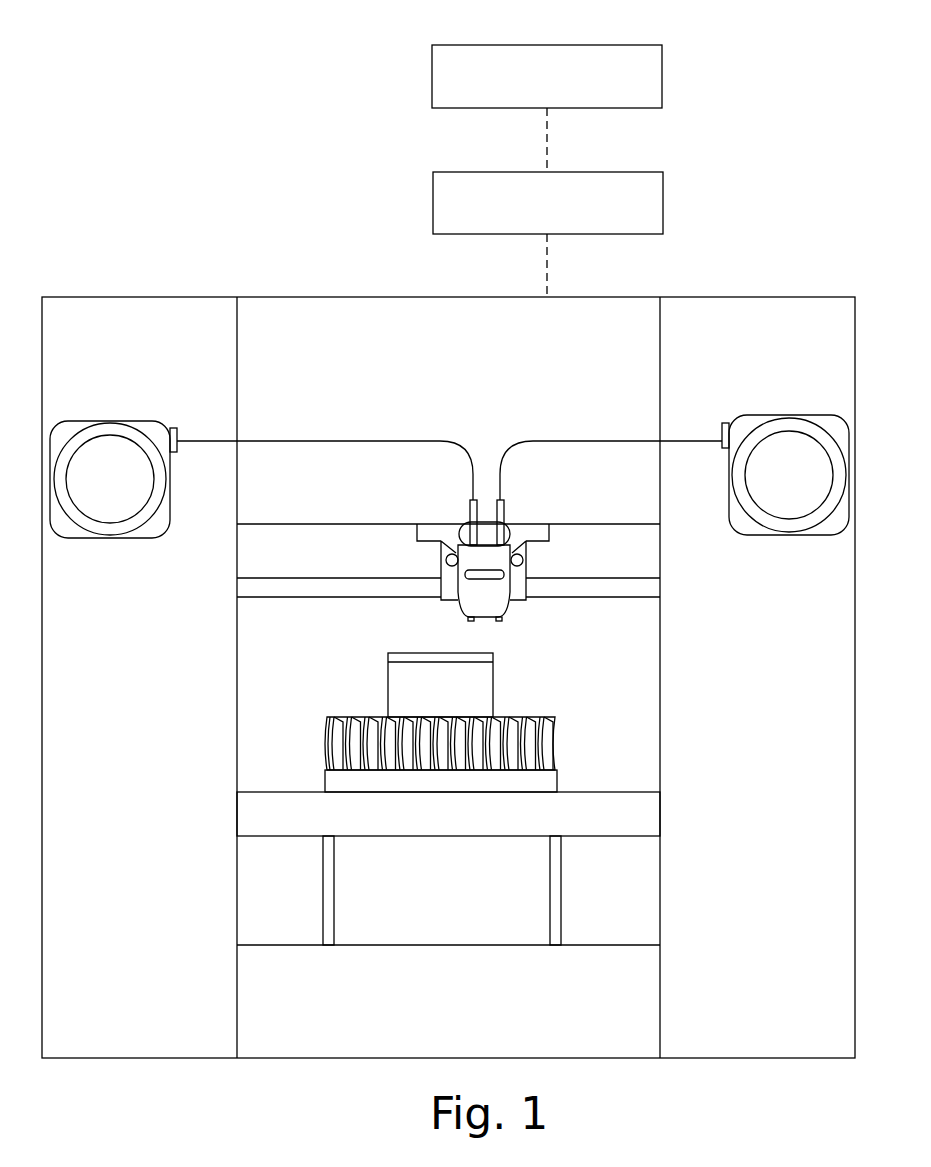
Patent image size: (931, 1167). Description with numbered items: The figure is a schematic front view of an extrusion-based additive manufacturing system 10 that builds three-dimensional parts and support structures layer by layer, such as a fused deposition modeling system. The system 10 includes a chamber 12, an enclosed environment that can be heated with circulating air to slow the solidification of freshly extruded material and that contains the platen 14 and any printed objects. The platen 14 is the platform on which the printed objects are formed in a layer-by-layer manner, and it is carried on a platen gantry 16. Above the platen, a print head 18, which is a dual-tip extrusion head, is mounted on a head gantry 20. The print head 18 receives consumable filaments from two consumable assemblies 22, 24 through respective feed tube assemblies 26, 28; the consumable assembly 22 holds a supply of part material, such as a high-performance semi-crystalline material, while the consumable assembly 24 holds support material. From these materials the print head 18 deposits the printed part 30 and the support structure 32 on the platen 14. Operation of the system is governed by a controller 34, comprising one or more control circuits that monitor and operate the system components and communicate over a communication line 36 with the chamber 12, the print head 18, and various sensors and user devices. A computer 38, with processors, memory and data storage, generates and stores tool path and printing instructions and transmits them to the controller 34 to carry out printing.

The additive manufacturing system 10 is at (160, 74).
The chamber 12 is at (247, 738).
The platen 14 is at (653, 827).
The platen gantry 16 is at (568, 929).
The print head 18 is at (532, 562).
The head gantry 20 is at (312, 577).
The consumable assembly 22 is at (98, 421).
The consumable assembly 24 is at (755, 415).
The feed tube assembly 26 is at (253, 441).
The feed tube assembly 28 is at (670, 441).
The 3D part 30 is at (355, 717).
The support structure 32 is at (560, 775).
The controller 34 is at (664, 190).
The communication line 36 is at (548, 268).
The computer 38 is at (663, 58).